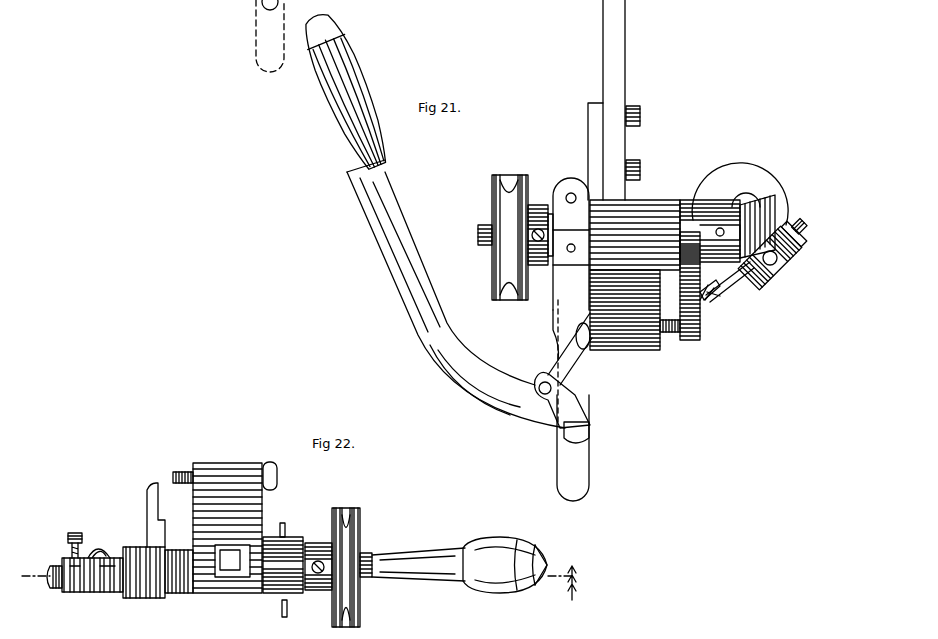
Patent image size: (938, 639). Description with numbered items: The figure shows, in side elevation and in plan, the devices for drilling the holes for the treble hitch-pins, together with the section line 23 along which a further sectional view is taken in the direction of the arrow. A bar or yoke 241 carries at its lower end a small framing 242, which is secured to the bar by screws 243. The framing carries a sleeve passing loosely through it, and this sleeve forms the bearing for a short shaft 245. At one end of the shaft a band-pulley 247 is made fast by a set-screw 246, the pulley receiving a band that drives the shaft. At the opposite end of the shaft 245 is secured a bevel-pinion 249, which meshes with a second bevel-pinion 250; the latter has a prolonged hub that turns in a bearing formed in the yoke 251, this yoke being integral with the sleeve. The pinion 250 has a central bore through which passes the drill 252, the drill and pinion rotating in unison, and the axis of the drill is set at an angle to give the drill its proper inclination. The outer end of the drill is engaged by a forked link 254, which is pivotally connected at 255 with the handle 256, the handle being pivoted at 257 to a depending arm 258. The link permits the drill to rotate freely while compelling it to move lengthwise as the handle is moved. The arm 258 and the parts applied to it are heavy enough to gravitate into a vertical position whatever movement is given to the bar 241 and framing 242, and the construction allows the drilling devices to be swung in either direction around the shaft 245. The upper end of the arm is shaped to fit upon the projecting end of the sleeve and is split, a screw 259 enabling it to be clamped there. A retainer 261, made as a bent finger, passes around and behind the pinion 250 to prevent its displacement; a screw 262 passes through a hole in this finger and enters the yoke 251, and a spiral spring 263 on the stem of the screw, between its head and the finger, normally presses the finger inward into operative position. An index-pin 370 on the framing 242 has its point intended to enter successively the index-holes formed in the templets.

In FIG. 22, the section line 23 is at (315, 572).
In FIG. 21, the bar or yoke 241 is at (620, 18).
In FIG. 21, the framing 242 is at (630, 345).
In FIG. 22, the framing 242 is at (233, 478).
In FIG. 21, the screws 243 is at (640, 116).
In FIG. 21, the short shaft 245 is at (480, 231).
In FIG. 22, the short shaft 245 is at (366, 551).
In FIG. 21, the set-screw 246 is at (537, 205).
In FIG. 22, the set-screw 246 is at (318, 540).
In FIG. 21, the band-pulley 247 is at (505, 178).
In FIG. 22, the band-pulley 247 is at (354, 508).
In FIG. 21, the bevel-pinion 249 is at (760, 205).
In FIG. 21, the second bevel-pinion 250 is at (778, 278).
In FIG. 22, the second bevel-pinion 250 is at (105, 590).
In FIG. 21, the yoke 251 is at (740, 192).
In FIG. 22, the yoke 251 is at (128, 598).
In FIG. 21, the drill 252 is at (732, 298).
In FIG. 21, the link 254 is at (568, 355).
In FIG. 21, the pivot 255 is at (543, 394).
In FIG. 21, the handle 256 is at (410, 287).
In FIG. 22, the handle 256 is at (420, 577).
In FIG. 21, the pivot 257 is at (587, 432).
In FIG. 21, the depending arm 258 is at (588, 478).
In FIG. 21, the screw 259 is at (571, 190).
In FIG. 21, the retainer 261 is at (745, 275).
In FIG. 22, the retainer 261 is at (104, 548).
In FIG. 21, the screw 262 is at (788, 252).
In FIG. 22, the screw 262 is at (68, 531).
In FIG. 22, the spiral spring 263 is at (72, 548).
In FIG. 21, the index-pin 370 is at (680, 332).
In FIG. 22, the index-pin 370 is at (183, 470).